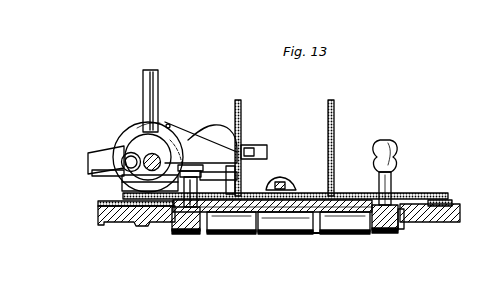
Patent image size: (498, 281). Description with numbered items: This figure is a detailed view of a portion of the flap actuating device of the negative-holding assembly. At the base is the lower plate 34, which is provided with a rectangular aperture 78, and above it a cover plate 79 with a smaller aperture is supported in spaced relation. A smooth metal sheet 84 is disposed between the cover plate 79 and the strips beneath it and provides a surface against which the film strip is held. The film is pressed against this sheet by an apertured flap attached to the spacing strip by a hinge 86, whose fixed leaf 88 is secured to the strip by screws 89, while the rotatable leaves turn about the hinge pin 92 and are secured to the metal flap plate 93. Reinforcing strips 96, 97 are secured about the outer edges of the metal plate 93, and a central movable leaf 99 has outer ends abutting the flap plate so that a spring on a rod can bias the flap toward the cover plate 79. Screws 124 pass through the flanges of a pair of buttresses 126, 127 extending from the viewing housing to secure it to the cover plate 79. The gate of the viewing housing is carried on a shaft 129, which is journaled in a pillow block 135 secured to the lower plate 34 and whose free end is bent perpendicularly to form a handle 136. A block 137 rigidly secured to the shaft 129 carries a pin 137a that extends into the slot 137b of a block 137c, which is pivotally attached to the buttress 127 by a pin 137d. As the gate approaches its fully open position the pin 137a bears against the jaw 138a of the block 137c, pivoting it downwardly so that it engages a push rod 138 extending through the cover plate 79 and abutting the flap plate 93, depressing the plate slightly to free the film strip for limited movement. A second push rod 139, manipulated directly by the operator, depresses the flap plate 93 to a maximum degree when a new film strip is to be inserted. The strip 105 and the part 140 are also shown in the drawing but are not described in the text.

The lower plate 34 is at (120, 222).
The rectangular aperture 78 is at (416, 223).
The cover plate 79 is at (444, 201).
The sheet 84 is at (418, 198).
The hinge 86 is at (325, 236).
The fixed leaf 88 is at (367, 235).
The screws 89 is at (230, 234).
The hinge pin 92 is at (401, 230).
The metal plate 93 is at (180, 234).
The reinforcing strip 96 is at (392, 238).
The reinforcing strip 97 is at (193, 235).
The central movable leaf 99 is at (278, 236).
The strip 105 is at (100, 203).
The screws 124 is at (310, 182).
The buttress 126 is at (335, 124).
The buttress 127 is at (242, 121).
The shaft 129 is at (192, 167).
The pillow block 135 is at (122, 133).
The handle 136 is at (150, 88).
The block 137 is at (122, 182).
The pin 137a is at (95, 173).
The slot 137b is at (137, 128).
The block 137c is at (168, 128).
The pin 137d is at (262, 148).
The push rod 138 is at (175, 128).
The jaw 138a is at (122, 157).
The second push rod 139 is at (390, 148).
The arm 140 is at (88, 162).